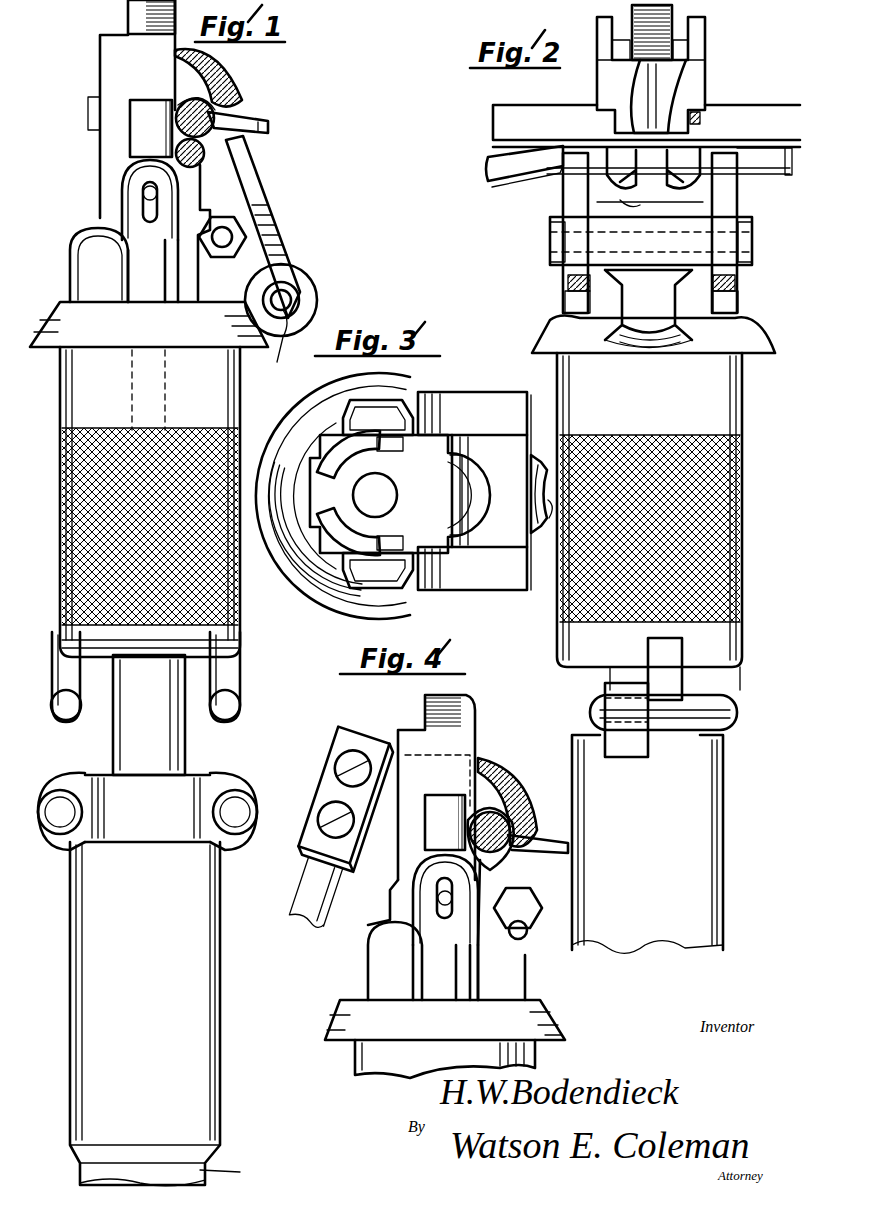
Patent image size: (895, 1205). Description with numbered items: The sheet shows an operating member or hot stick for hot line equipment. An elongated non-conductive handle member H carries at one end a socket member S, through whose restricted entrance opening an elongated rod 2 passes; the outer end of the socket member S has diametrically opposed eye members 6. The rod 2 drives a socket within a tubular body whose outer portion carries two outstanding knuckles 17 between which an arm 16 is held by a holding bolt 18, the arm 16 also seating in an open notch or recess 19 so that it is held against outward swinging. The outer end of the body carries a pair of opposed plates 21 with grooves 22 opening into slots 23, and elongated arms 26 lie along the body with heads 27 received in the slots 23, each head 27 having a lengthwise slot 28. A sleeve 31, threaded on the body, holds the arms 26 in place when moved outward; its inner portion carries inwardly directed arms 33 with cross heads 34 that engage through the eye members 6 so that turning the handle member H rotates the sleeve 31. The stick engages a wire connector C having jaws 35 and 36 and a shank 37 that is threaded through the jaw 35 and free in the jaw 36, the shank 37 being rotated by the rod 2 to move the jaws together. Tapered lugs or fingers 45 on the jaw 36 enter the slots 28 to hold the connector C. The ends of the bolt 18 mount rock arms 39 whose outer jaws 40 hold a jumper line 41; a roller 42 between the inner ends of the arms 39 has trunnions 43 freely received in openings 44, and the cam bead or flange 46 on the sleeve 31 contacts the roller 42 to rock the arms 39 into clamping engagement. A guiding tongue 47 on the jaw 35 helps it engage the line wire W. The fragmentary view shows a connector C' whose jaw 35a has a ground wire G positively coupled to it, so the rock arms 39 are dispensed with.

In FIG. 1, the elongated rod 2 is at (168, 752).
In FIG. 2, the elongated rod 2 is at (610, 676).
In FIG. 1, the eye members 6 is at (38, 800).
In FIG. 2, the eye members 6 is at (632, 757).
In FIG. 2, the arm 16 is at (650, 270).
In FIG. 1, the knuckles 17 is at (252, 195).
In FIG. 2, the knuckles 17 is at (550, 226).
In FIG. 3, the knuckles 17 is at (470, 440).
In FIG. 4, the knuckles 17 is at (520, 890).
In FIG. 1, the holding bolt 18 is at (222, 237).
In FIG. 2, the holding bolt 18 is at (550, 256).
In FIG. 4, the holding bolt 18 is at (522, 935).
In FIG. 2, the notch or recess 19 is at (635, 204).
In FIG. 1, the plates 21 is at (130, 142).
In FIG. 3, the plates 21 is at (365, 590).
In FIG. 4, the plates 21 is at (440, 795).
In FIG. 3, the grooves 22 is at (378, 590).
In FIG. 1, the slots 23 is at (120, 205).
In FIG. 4, the slots 23 is at (398, 882).
In FIG. 1, the elongated arms 26 is at (150, 280).
In FIG. 4, the elongated arms 26 is at (440, 982).
In FIG. 1, the heads 27 is at (200, 160).
In FIG. 2, the heads 27 is at (669, 173).
In FIG. 4, the heads 27 is at (428, 903).
In FIG. 1, the slot 28 is at (143, 192).
In FIG. 4, the slot 28 is at (445, 920).
In FIG. 1, the sleeve 31 is at (62, 510).
In FIG. 2, the sleeve 31 is at (745, 408).
In FIG. 4, the sleeve 31 is at (362, 1055).
In FIG. 1, the inwardly directed arms 33 is at (60, 667).
In FIG. 2, the inwardly directed arms 33 is at (682, 673).
In FIG. 1, the cross heads 34 is at (64, 710).
In FIG. 2, the cross heads 34 is at (737, 713).
In FIG. 1, the jaw 35 is at (192, 80).
In FIG. 2, the jaw 35 is at (650, 90).
In FIG. 4, the jaw 35a is at (488, 775).
In FIG. 3, the jaw 36 is at (440, 490).
In FIG. 1, the shank 37 is at (128, 10).
In FIG. 2, the shank 37 is at (632, 12).
In FIG. 3, the shank 37 is at (368, 495).
In FIG. 1, the rock arm 39 is at (286, 258).
In FIG. 2, the rock arm 39 is at (563, 185).
In FIG. 3, the rock arm 39 is at (505, 405).
In FIG. 1, the jaw 40 is at (210, 170).
In FIG. 1, the jumper line 41 is at (230, 135).
In FIG. 2, the jumper line 41 is at (560, 164).
In FIG. 1, the roller 42 is at (305, 285).
In FIG. 2, the roller 42 is at (655, 340).
In FIG. 3, the roller 42 is at (550, 522).
In FIG. 1, the trunnions 43 is at (290, 339).
In FIG. 2, the trunnions 43 is at (565, 305).
In FIG. 1, the opening 44 is at (292, 297).
In FIG. 2, the opening 44 is at (568, 284).
In FIG. 1, the tapered lugs or fingers 45 is at (150, 222).
In FIG. 1, the cam bead or flange 46 is at (52, 318).
In FIG. 3, the cam bead or flange 46 is at (312, 598).
In FIG. 4, the cam bead or flange 46 is at (340, 1018).
In FIG. 1, the guiding tongue 47 is at (268, 128).
In FIG. 2, the guiding tongue 47 is at (700, 118).
In FIG. 3, the guiding tongue 47 is at (500, 475).
In FIG. 1, the wire connector C is at (118, 109).
In FIG. 2, the wire connector C is at (669, 75).
In FIG. 3, the wire connector C is at (369, 477).
In FIG. 4, the connector C' is at (447, 787).
In FIG. 1, the line wire W is at (188, 108).
In FIG. 2, the line wire W is at (537, 98).
In FIG. 4, the line wire W is at (495, 810).
In FIG. 1, the socket member S is at (98, 898).
In FIG. 2, the socket member S is at (690, 896).
In FIG. 1, the handle member H is at (242, 1171).
In FIG. 4, the ground wire G is at (301, 900).